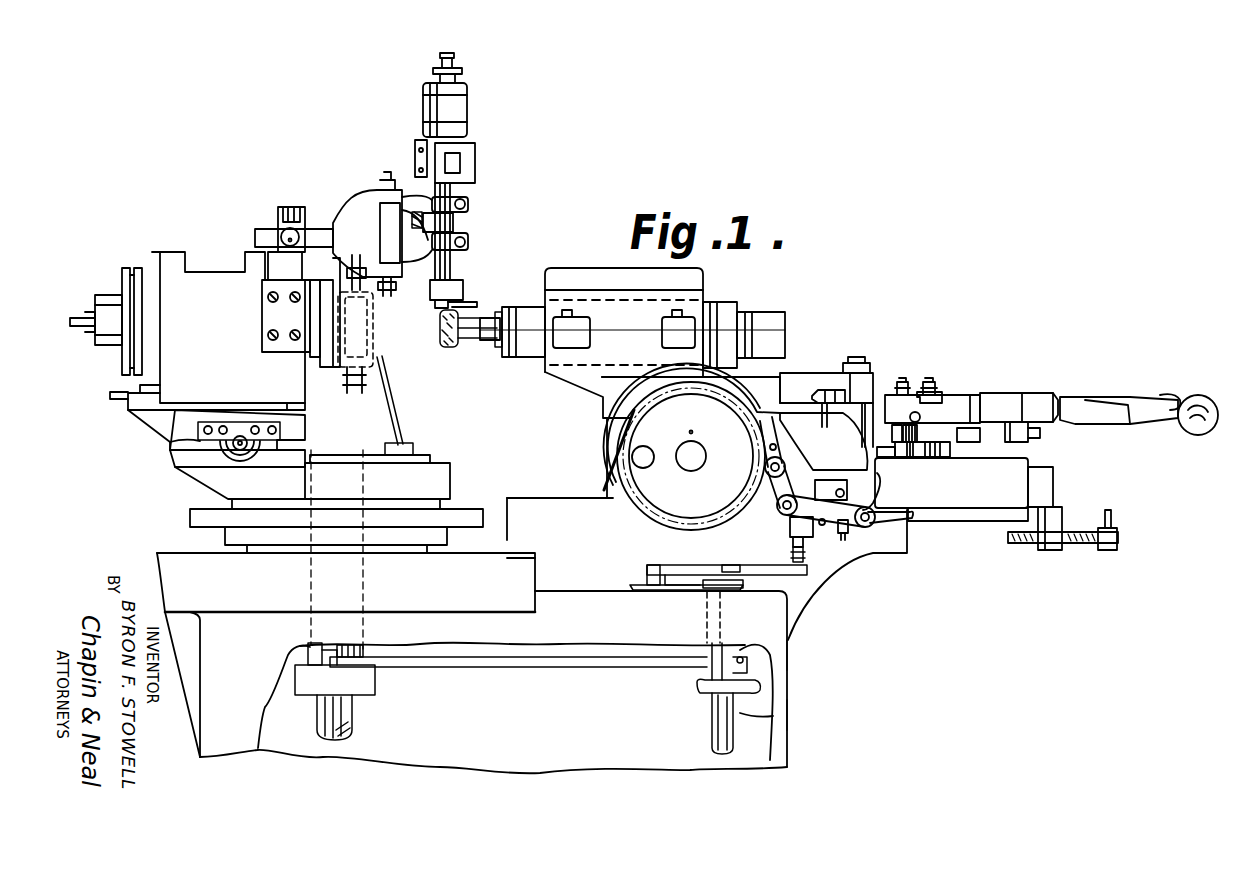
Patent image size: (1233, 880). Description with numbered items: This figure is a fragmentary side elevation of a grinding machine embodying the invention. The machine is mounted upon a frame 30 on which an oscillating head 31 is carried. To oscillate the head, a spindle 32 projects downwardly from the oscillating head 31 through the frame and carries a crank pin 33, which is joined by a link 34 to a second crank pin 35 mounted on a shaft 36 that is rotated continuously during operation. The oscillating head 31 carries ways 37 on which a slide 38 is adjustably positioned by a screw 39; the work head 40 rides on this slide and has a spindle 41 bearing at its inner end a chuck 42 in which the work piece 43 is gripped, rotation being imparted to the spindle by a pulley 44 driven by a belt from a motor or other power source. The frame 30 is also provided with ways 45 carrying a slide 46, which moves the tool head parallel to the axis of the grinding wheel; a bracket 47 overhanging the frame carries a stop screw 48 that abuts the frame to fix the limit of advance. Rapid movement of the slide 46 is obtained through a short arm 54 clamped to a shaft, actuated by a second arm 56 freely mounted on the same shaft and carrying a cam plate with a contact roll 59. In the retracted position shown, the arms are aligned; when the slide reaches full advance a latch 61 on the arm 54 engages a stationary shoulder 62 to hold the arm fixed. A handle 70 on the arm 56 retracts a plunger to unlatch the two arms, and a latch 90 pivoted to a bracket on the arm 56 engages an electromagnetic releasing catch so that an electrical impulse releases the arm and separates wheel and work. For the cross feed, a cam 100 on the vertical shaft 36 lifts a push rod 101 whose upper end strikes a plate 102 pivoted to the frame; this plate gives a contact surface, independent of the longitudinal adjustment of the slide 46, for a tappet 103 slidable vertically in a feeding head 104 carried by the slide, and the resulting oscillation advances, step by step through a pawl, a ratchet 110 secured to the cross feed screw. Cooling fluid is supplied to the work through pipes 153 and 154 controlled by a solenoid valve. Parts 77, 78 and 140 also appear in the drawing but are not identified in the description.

The frame 30 is at (575, 760).
The oscillating head 31 is at (205, 482).
The spindle 32 is at (308, 650).
The crank pin 33 is at (358, 640).
The link 34 is at (487, 665).
The crank pin 35 is at (787, 655).
The shaft 36 is at (787, 714).
The ways 37 is at (172, 443).
The slide 38 is at (295, 432).
The screw 39 is at (250, 455).
The work head 40 is at (137, 415).
The spindle 41 is at (300, 352).
The chuck 42 is at (348, 372).
The work piece 43 is at (375, 322).
The pulley 44 is at (122, 372).
The ways 45 is at (445, 328).
The slide 46 is at (965, 495).
The bracket 47 is at (1060, 515).
The stop screw 48 is at (1028, 548).
The short arm 54 is at (955, 405).
The second arm 56 is at (1122, 390).
The contact roll 59 is at (943, 390).
The latch 61 is at (960, 440).
The stationary shoulder 62 is at (905, 380).
The handle 70 is at (1172, 400).
The post 77 is at (858, 357).
The plug 78 is at (808, 392).
The latch 90 is at (1030, 434).
The cam 100 is at (700, 690).
The push rod 101 is at (700, 672).
The plate 102 is at (670, 562).
The tappet 103 is at (803, 550).
The feeding head 104 is at (775, 532).
The ratchet 110 is at (645, 508).
The head 140 is at (423, 105).
The pipe 153 is at (402, 398).
The pipe 154 is at (92, 305).